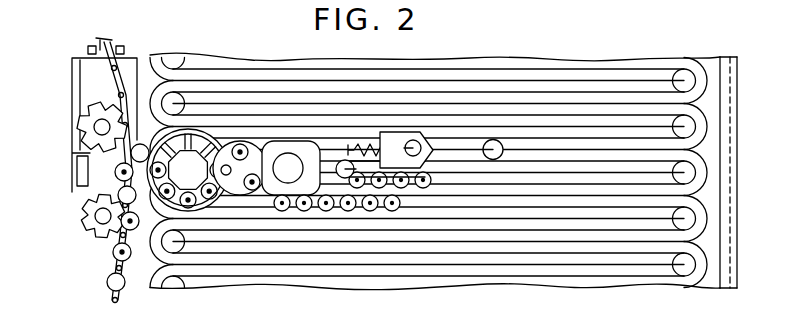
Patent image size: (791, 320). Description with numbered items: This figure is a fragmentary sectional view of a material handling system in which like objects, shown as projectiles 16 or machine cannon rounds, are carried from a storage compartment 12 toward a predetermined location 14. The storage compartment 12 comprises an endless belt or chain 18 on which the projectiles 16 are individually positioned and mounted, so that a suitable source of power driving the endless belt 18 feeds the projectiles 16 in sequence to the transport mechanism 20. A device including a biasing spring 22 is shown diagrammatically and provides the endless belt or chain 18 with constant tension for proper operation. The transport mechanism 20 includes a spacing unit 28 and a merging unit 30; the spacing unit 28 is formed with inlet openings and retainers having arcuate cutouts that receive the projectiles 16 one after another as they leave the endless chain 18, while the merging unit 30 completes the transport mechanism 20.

The storage compartment 12 is at (545, 138).
The predetermined location 14 is at (105, 180).
The projectiles 16 is at (250, 196).
The endless belt or chain 18 is at (613, 140).
The transport mechanism 20 is at (228, 141).
The biasing spring 22 is at (434, 149).
The spacing unit 28 is at (255, 145).
The merging unit 30 is at (188, 130).